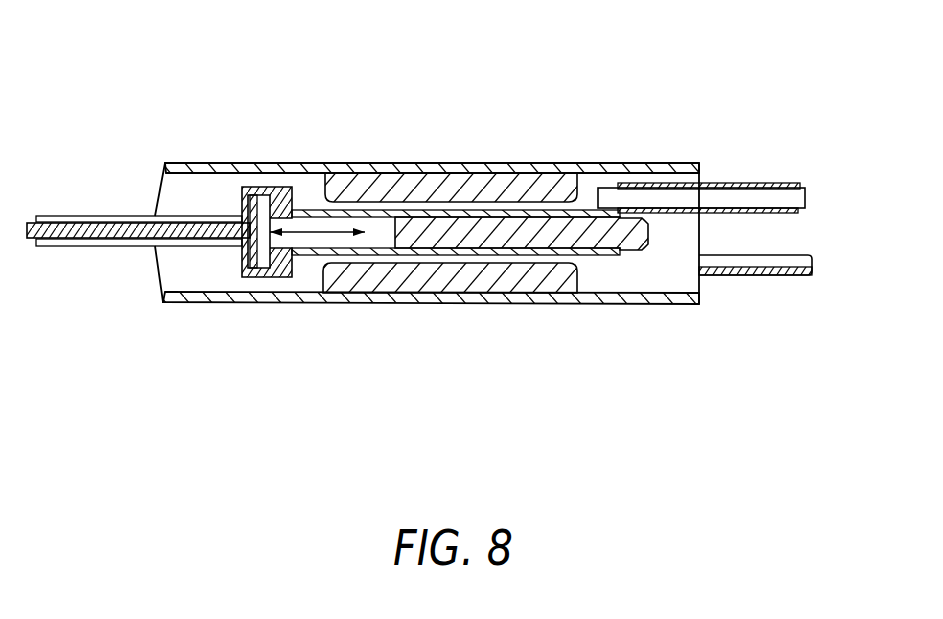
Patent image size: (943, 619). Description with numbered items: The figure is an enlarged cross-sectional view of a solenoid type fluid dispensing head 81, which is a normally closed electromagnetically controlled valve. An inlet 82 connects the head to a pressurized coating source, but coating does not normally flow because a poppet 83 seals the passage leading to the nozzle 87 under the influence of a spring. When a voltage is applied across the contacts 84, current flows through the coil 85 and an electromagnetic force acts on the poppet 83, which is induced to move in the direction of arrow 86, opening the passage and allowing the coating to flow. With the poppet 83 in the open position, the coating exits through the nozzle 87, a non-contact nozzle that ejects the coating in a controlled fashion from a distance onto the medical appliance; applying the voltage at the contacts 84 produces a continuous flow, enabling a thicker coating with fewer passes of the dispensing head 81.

The solenoid type fluid dispensing head 81 is at (524, 118).
The inlet 82 is at (729, 184).
The poppet 83 is at (263, 197).
The contacts 84 is at (812, 255).
The coil 85 is at (415, 163).
The arrow 86 is at (317, 237).
The nozzle 87 is at (93, 216).